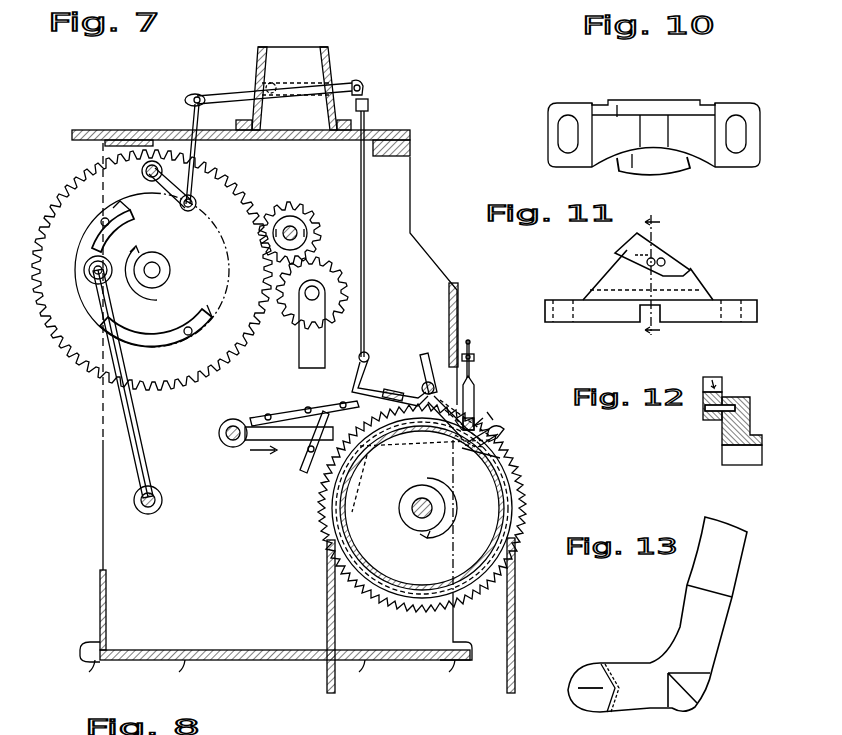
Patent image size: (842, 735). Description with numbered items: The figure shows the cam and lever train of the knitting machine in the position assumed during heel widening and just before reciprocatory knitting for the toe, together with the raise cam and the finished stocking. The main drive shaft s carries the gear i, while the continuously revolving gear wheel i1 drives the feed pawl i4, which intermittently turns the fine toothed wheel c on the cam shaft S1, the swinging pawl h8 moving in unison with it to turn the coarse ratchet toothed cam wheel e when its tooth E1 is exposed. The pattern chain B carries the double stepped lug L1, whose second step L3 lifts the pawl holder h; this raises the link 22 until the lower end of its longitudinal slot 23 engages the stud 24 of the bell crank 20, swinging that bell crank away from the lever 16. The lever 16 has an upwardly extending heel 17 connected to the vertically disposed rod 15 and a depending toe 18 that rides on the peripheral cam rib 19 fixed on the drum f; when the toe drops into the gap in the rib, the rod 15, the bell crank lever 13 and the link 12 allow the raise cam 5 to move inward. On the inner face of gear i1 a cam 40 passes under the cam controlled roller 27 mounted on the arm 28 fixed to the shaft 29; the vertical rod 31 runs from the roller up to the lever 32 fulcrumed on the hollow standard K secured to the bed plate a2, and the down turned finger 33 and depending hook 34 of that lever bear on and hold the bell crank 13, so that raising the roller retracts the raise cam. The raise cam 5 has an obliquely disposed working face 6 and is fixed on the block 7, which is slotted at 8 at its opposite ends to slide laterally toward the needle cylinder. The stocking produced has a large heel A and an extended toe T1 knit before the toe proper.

In FIG. 7, the shaft 29 is at (142, 130).
In FIG. 7, the bed plate a2 is at (410, 133).
In FIG. 7, the vertically disposed rod 15 is at (366, 207).
In FIG. 7, the pattern chain B is at (325, 610).
In FIG. 7, the hollow standard K is at (290, 58).
In FIG. 7, the lever 32 is at (238, 92).
In FIG. 7, the vertical rod 31 is at (193, 115).
In FIG. 7, the arm 28 is at (178, 185).
In FIG. 7, the cam controlled roller 27 is at (184, 213).
In FIG. 7, the bell crank lever 13 is at (345, 85).
In FIG. 7, the down turned finger 33 is at (366, 86).
In FIG. 7, the depending hook 34 is at (370, 107).
In FIG. 7, the cam 40 is at (167, 332).
In FIG. 7, the gear wheel i1 is at (95, 362).
In FIG. 7, the gear i is at (290, 214).
In FIG. 7, the main drive shaft s is at (296, 231).
In FIG. 7, the swinging pawl h8 is at (300, 460).
In FIG. 7, the feed pawl i4 is at (335, 425).
In FIG. 7, the heel 17 is at (375, 370).
In FIG. 7, the lever 16 is at (390, 397).
In FIG. 7, the bell crank 20 is at (465, 340).
In FIG. 7, the longitudinal slot 23 is at (472, 348).
In FIG. 7, the stud 24 is at (476, 360).
In FIG. 7, the link 22 is at (472, 400).
In FIG. 7, the toe 18 is at (466, 430).
In FIG. 7, the second step L3 is at (480, 415).
In FIG. 7, the pawl holder h is at (495, 412).
In FIG. 7, the double stepped lug L1 is at (500, 433).
In FIG. 7, the peripheral cam rib 19 is at (495, 455).
In FIG. 7, the fine toothed wheel c is at (522, 517).
In FIG. 7, the coarse ratchet toothed cam wheel e is at (488, 498).
In FIG. 7, the shaft S1 is at (416, 516).
In FIG. 7, the tooth E1 is at (372, 494).
In FIG. 7, the element I is at (470, 450).
In FIG. 7, the drum f is at (330, 537).
In FIG. 10, the block 7 is at (655, 122).
In FIG. 11, the block 7 is at (686, 290).
In FIG. 12, the block 7 is at (755, 418).
In FIG. 10, the transverse slots 8 is at (567, 122).
In FIG. 11, the transverse slots 8 is at (566, 306).
In FIG. 10, the working face 6 is at (642, 168).
In FIG. 11, the working face 6 is at (668, 247).
In FIG. 12, the working face 6 is at (722, 385).
In FIG. 10, the raise cam 5 is at (672, 160).
In FIG. 11, the raise cam 5 is at (683, 266).
In FIG. 12, the raise cam 5 is at (705, 412).
In FIG. 11, the link 12 is at (653, 276).
In FIG. 13, the heel A is at (703, 688).
In FIG. 13, the extended toe T1 is at (605, 665).